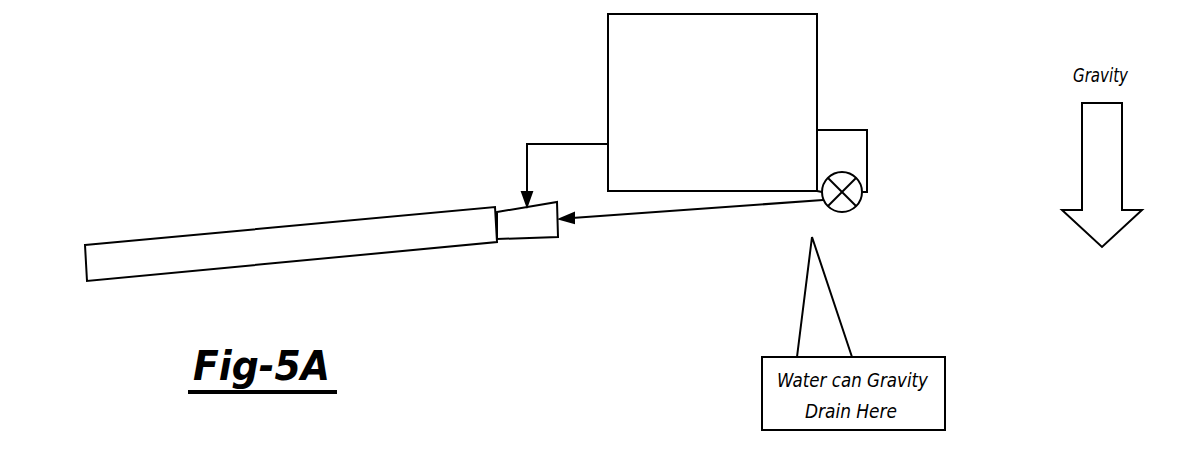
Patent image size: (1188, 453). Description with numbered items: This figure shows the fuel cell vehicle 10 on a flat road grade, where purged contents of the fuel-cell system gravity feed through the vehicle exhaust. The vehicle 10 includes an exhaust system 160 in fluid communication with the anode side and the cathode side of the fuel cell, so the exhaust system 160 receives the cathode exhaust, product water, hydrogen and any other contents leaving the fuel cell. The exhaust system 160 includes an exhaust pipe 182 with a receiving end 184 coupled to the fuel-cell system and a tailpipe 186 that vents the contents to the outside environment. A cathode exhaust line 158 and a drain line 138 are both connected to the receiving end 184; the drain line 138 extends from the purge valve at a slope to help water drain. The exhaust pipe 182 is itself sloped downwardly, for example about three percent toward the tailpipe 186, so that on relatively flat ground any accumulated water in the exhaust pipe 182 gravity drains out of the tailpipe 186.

The vehicle 10 is at (817, 52).
The drain line 138 is at (842, 212).
The cathode exhaust line 158 is at (527, 166).
The exhaust system 160 is at (592, 251).
The exhaust pipe 182 is at (391, 235).
The receiving end 184 is at (523, 252).
The tailpipe 186 is at (117, 242).